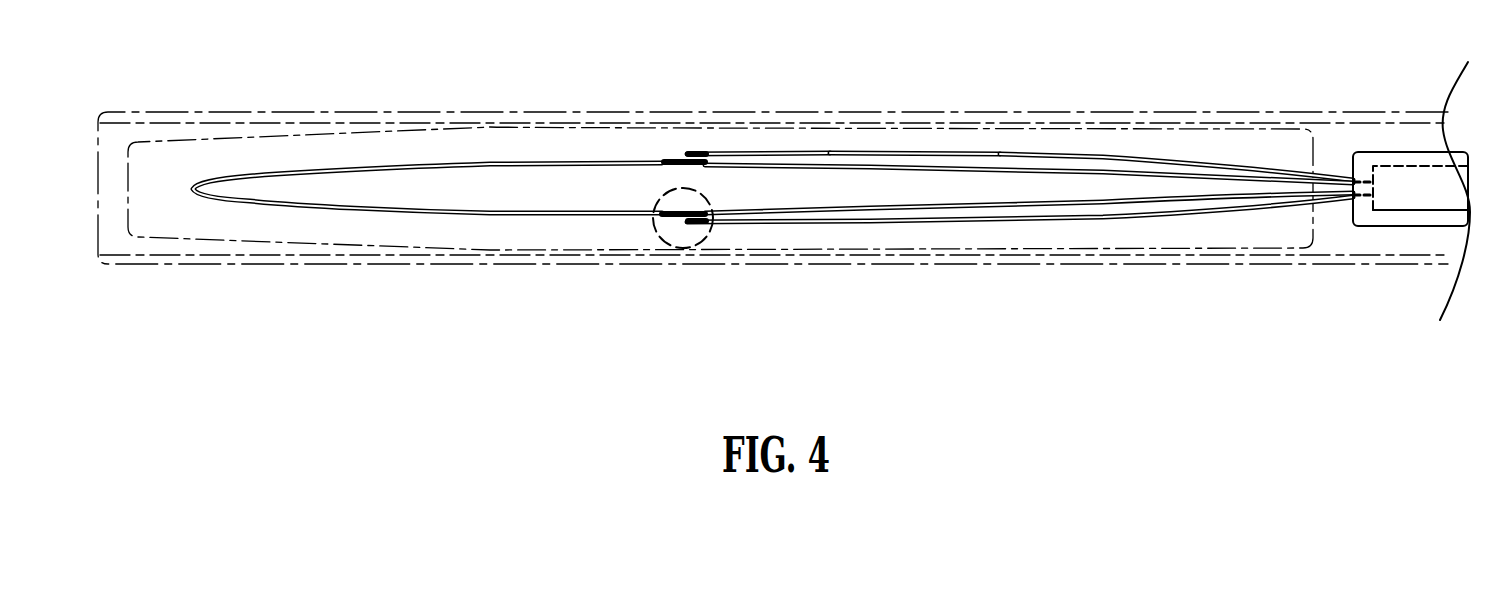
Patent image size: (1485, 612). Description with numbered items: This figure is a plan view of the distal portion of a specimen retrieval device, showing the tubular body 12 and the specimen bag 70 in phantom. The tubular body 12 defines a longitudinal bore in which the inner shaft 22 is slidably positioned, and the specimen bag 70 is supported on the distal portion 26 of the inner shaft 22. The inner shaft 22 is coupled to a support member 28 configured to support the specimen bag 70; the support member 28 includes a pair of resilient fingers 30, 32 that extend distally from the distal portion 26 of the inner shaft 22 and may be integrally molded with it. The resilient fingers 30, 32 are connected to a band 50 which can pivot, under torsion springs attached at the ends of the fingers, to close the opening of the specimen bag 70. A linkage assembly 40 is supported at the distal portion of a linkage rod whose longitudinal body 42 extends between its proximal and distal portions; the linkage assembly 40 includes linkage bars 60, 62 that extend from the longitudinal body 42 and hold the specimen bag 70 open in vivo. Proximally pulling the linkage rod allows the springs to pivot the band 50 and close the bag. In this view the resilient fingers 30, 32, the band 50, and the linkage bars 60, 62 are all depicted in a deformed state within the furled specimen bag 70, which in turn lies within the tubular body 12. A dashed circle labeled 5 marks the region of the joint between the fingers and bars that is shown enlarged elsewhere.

The tubular body 12 is at (248, 112).
The specimen bag 70 is at (297, 135).
The band 50 is at (483, 161).
The linkage assembly 40 is at (760, 151).
The resilient finger 30 is at (857, 153).
The support member 28 is at (1097, 154).
The linkage bar 60 is at (920, 170).
The linkage bar 62 is at (857, 213).
The resilient finger 32 is at (790, 225).
The inner shaft 22 is at (1378, 152).
The distal portion of the inner shaft 26 is at (1410, 163).
The longitudinal body 42 is at (1385, 210).
The detail region shown in FIG. 5 is at (662, 237).